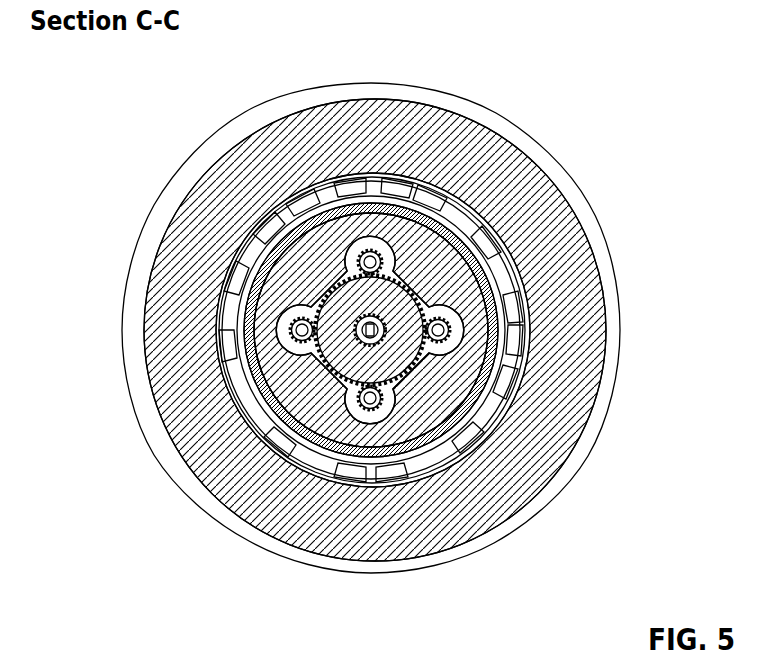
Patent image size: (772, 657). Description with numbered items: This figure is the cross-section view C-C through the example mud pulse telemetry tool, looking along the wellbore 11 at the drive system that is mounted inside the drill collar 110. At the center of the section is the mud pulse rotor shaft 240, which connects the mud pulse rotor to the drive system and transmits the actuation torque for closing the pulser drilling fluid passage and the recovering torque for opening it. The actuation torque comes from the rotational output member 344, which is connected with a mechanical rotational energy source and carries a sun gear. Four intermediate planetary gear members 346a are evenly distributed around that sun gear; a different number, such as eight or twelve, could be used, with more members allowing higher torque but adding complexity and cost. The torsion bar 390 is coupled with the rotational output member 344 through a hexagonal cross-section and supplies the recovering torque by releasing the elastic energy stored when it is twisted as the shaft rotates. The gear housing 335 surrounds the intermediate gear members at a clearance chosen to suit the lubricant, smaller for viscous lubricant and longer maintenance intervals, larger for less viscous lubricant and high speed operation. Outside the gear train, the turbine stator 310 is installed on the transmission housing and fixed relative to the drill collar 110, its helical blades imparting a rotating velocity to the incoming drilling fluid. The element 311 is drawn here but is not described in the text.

The wellbore 11 is at (522, 117).
The drill collar 110 is at (190, 230).
The mud pulse rotor shaft 240 is at (337, 317).
The rotational output member 344 is at (258, 237).
The intermediate planetary gear members 346a is at (371, 330).
The torsion bar 390 is at (378, 322).
The turbine stator 310 is at (503, 343).
The intermediate ring 311 is at (490, 417).
The gear housing 335 is at (450, 450).